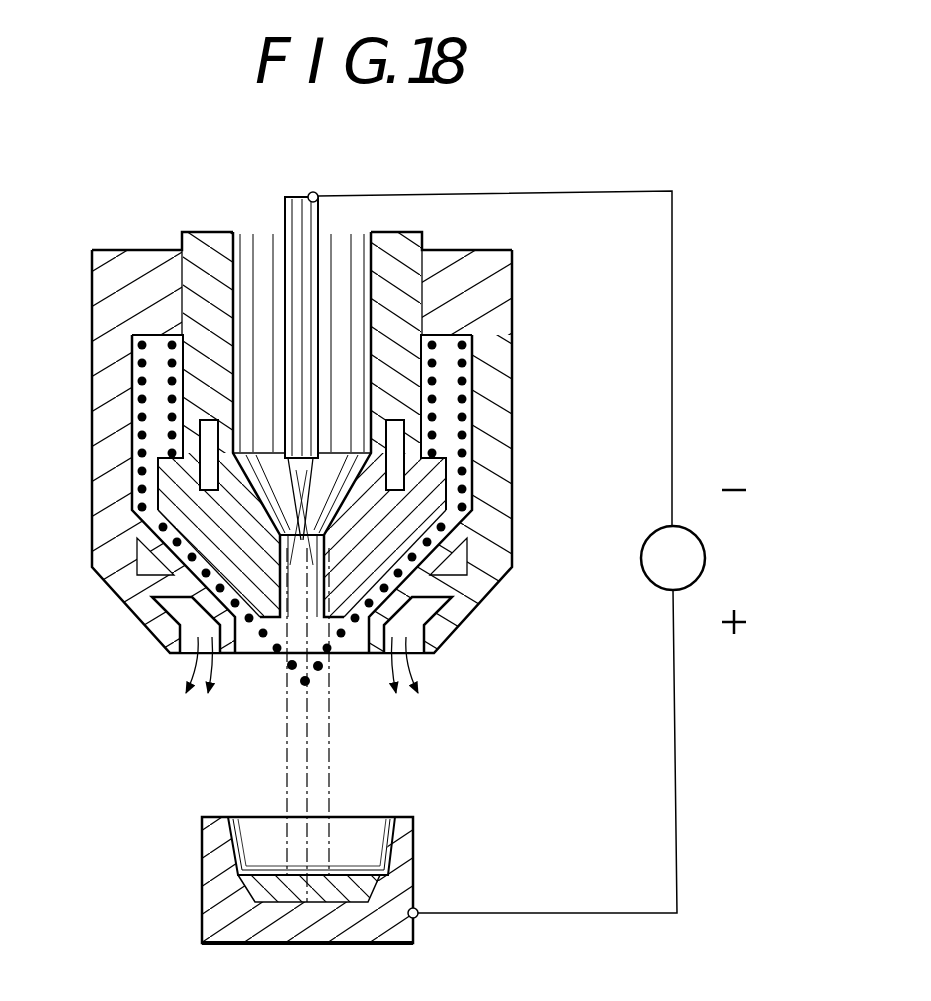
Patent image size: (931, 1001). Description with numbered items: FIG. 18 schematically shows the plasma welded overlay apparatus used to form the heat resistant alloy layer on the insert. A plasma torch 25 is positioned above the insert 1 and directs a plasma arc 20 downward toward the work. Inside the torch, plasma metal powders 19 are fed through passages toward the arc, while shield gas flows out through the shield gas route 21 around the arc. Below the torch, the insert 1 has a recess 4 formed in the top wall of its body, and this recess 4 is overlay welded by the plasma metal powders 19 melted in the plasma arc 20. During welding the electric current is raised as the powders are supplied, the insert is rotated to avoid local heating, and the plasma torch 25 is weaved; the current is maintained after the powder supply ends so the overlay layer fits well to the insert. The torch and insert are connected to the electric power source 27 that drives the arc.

The plasma torch 25 is at (340, 442).
The plasma metal powders 19 is at (142, 433).
The shield gas route 21 is at (162, 627).
The plasma arc 20 is at (310, 684).
The recess 4 is at (360, 840).
The insert body 1 is at (377, 855).
The power source 27 is at (705, 558).